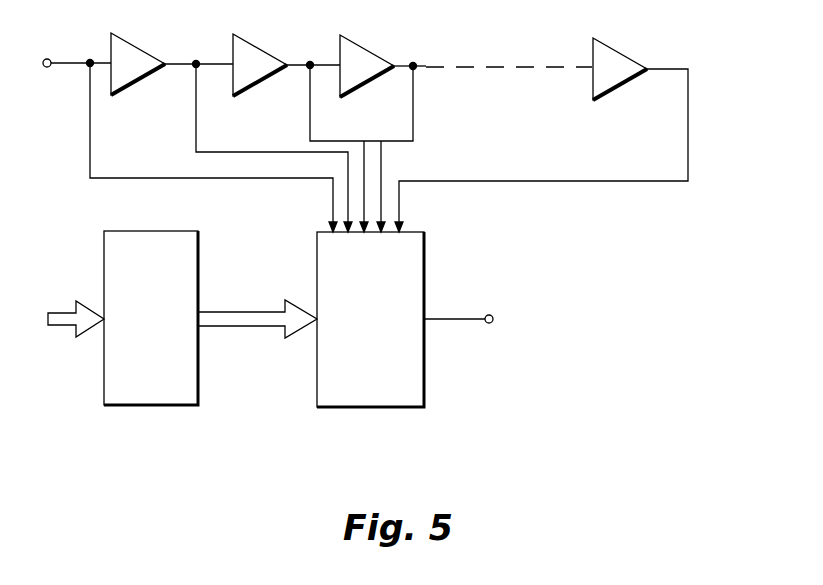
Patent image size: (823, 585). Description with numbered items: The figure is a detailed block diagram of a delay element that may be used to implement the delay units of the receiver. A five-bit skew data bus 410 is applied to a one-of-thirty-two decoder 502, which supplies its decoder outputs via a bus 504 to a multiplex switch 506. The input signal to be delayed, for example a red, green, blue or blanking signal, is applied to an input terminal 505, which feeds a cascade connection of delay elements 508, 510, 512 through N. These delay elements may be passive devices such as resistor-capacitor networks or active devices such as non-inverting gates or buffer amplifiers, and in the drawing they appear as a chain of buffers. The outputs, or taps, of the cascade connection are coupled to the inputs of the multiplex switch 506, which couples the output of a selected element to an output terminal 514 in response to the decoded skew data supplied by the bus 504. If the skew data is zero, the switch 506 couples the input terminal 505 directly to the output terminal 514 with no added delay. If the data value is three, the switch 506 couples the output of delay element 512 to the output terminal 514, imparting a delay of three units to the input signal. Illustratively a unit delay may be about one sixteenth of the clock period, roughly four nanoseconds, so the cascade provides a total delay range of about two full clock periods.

The input terminal 505 is at (47, 59).
The delay element 508 is at (139, 49).
The delay element 510 is at (261, 50).
The delay element 512 is at (367, 50).
The delay element N is at (618, 51).
The 1-of-32 decoder 502 is at (157, 406).
The skew data bus 410 is at (62, 328).
The bus 504 is at (241, 327).
The multiplex switch 506 is at (387, 408).
The output terminal 514 is at (489, 324).